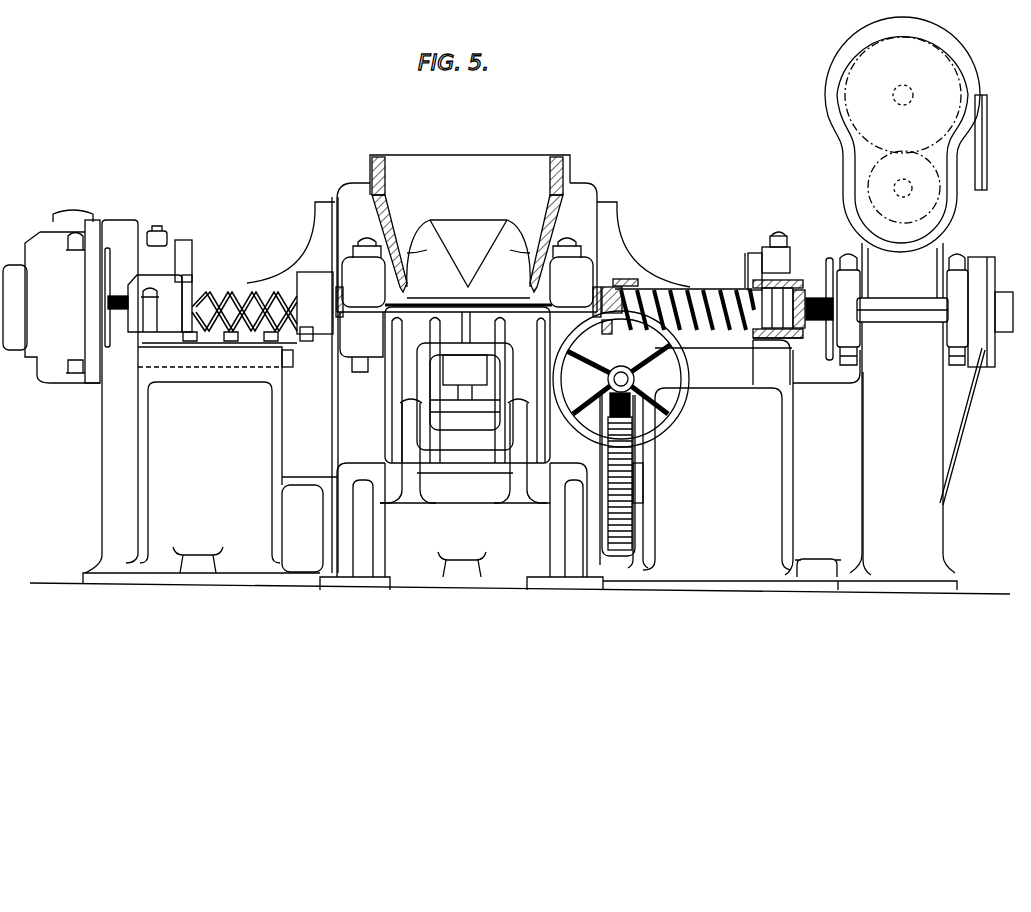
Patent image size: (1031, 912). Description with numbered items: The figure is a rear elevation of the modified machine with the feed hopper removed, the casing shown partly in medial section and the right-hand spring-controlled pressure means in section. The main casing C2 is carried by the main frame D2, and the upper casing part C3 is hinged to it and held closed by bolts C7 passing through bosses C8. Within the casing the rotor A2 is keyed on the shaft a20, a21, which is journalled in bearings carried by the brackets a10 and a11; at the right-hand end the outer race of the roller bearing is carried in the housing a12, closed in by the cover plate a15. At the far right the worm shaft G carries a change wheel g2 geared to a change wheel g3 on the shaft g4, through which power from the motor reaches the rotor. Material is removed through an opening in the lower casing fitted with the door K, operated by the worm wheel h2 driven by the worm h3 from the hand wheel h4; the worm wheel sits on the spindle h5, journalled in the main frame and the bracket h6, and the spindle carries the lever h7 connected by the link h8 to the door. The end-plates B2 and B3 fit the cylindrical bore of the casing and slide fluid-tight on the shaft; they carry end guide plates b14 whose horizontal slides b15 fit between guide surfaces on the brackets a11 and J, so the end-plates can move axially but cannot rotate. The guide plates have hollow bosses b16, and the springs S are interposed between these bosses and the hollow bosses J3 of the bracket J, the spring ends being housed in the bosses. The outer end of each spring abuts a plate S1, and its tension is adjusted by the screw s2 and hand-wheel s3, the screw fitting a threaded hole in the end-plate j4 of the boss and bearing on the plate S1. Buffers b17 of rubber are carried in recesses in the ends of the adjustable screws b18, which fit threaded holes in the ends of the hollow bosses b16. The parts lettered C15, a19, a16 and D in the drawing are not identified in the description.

The housing a12 is at (50, 242).
The cover plate a15 is at (182, 250).
The shaft part a20 is at (190, 280).
The springs S is at (232, 290).
The end guide plates b14 is at (315, 213).
The casing part C3 is at (347, 183).
The hopper C15 is at (430, 165).
The end-plate B3 is at (385, 200).
The end-plate B2 is at (547, 207).
The rotor A2 is at (460, 227).
The bolts C7 is at (370, 240).
The bosses C8 is at (347, 282).
The buffers b17 is at (345, 310).
The adjustable screws b18 is at (614, 286).
The hollow bosses b16 is at (307, 330).
The horizontal slides b15 is at (287, 355).
The shaft part a21 is at (688, 283).
The spring abutment block a19 is at (748, 255).
The abutment plate a16 is at (730, 243).
The bracket J is at (157, 327).
The hollow boss J3 is at (140, 275).
The end-plate of boss j4 is at (800, 287).
The screw s2 is at (113, 297).
The hand-wheel s3 is at (100, 323).
The plate S1 is at (763, 340).
The bracket a10 is at (273, 458).
The bracket a11 is at (803, 450).
The main casing C2 is at (343, 422).
The door K is at (383, 380).
The link h8 is at (440, 378).
The lever h7 is at (405, 503).
The spindle h5 is at (472, 492).
The bracket h6 is at (363, 557).
The worm h3 is at (607, 381).
The hand wheel h4 is at (683, 407).
The worm wheel h2 is at (630, 527).
The hand wheel D is at (631, 379).
The main frame D2 is at (442, 567).
The shaft G is at (890, 134).
The change wheel g2 is at (850, 117).
The change wheel g3 is at (867, 187).
The shaft g4 is at (910, 186).